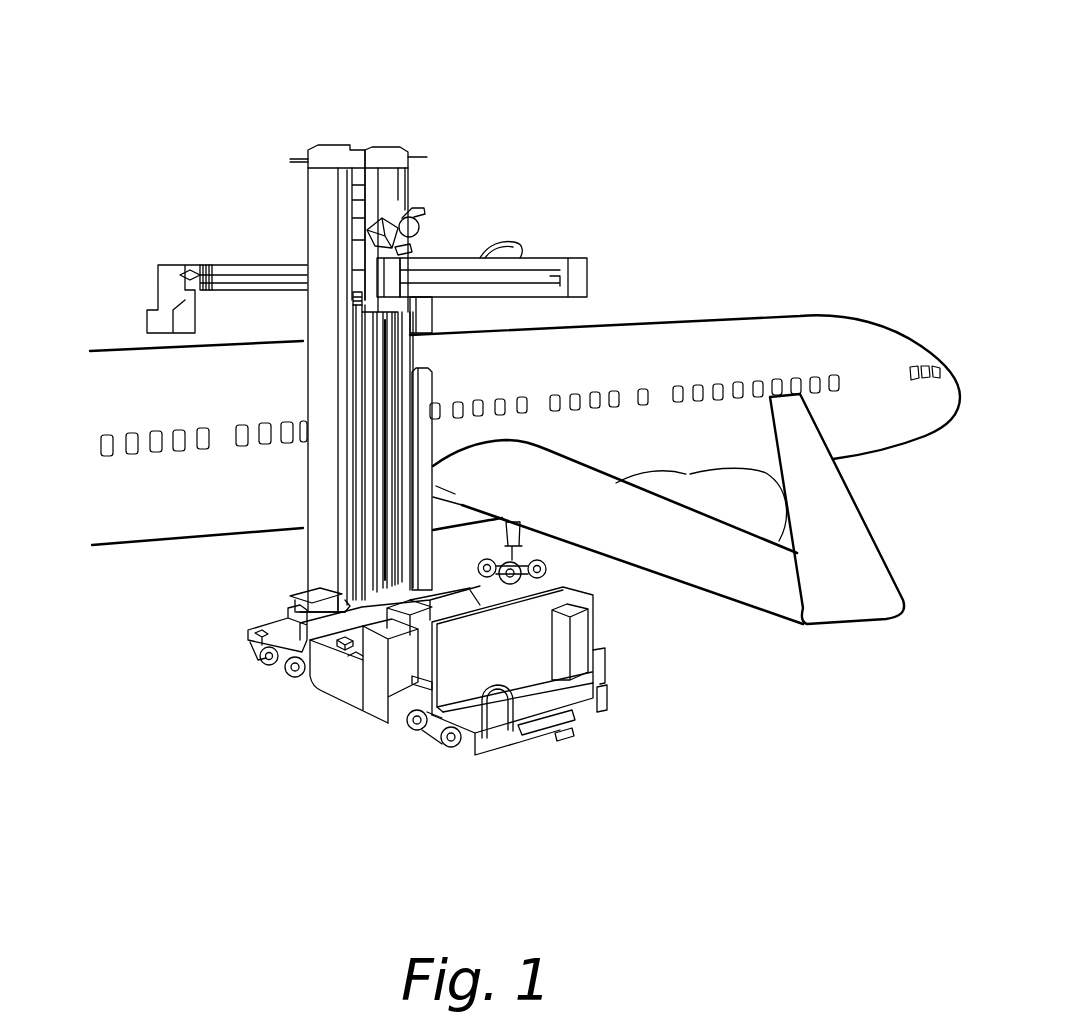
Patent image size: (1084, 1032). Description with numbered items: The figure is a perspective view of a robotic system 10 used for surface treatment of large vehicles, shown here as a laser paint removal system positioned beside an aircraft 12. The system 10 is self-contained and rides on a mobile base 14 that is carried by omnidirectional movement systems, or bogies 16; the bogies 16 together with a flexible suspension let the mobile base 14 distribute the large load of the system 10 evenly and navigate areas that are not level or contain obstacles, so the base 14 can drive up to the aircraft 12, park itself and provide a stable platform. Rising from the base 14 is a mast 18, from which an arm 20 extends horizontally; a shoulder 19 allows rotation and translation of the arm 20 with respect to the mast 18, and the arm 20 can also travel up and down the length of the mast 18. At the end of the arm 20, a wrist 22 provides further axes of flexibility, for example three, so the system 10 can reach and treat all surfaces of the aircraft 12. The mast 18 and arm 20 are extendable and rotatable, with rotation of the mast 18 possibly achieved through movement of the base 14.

The robotic system 10 is at (518, 107).
The aircraft 12 is at (863, 343).
The mobile base 14 is at (325, 703).
The omnidirectional movement systems (bogies) 16 is at (273, 682).
The mast 18 is at (289, 464).
The shoulder 19 is at (418, 193).
The arm 20 is at (240, 307).
The wrist 22 is at (136, 298).